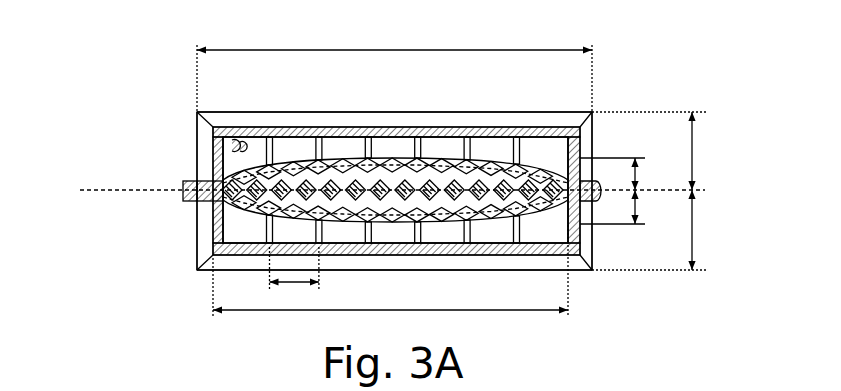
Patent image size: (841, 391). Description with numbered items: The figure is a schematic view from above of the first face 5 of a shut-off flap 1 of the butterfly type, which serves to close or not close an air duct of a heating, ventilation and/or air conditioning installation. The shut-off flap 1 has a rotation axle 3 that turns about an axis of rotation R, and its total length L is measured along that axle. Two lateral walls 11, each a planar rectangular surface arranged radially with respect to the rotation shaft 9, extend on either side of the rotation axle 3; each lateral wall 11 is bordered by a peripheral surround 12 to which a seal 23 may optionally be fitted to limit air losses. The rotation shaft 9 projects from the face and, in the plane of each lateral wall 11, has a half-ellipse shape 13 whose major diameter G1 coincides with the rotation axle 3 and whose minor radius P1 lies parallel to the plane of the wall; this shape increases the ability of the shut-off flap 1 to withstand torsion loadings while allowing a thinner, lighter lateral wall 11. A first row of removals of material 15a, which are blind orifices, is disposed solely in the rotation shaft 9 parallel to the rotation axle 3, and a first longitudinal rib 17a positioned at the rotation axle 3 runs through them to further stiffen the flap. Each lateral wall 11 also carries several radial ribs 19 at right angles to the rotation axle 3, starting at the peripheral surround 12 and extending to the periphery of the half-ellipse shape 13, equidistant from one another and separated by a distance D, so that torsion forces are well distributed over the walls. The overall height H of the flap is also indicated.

The shut-off flap 1 is at (616, 83).
The rotation axle 3 is at (183, 196).
The first face 5 is at (546, 127).
The rotation shaft 9 is at (554, 161).
The lateral wall 11 is at (234, 141).
The peripheral surround 12 is at (274, 143).
The half-ellipse shape 13 is at (442, 165).
The first row of removals of material 15a is at (266, 168).
The first longitudinal rib 17a is at (367, 162).
The radial rib 19 is at (392, 166).
The seal 23 is at (197, 270).
The axis of rotation R is at (98, 190).
The total length L is at (394, 68).
The major diameter G1 is at (390, 282).
The distance D is at (294, 278).
The minor radius P1 is at (623, 191).
The height H is at (650, 191).